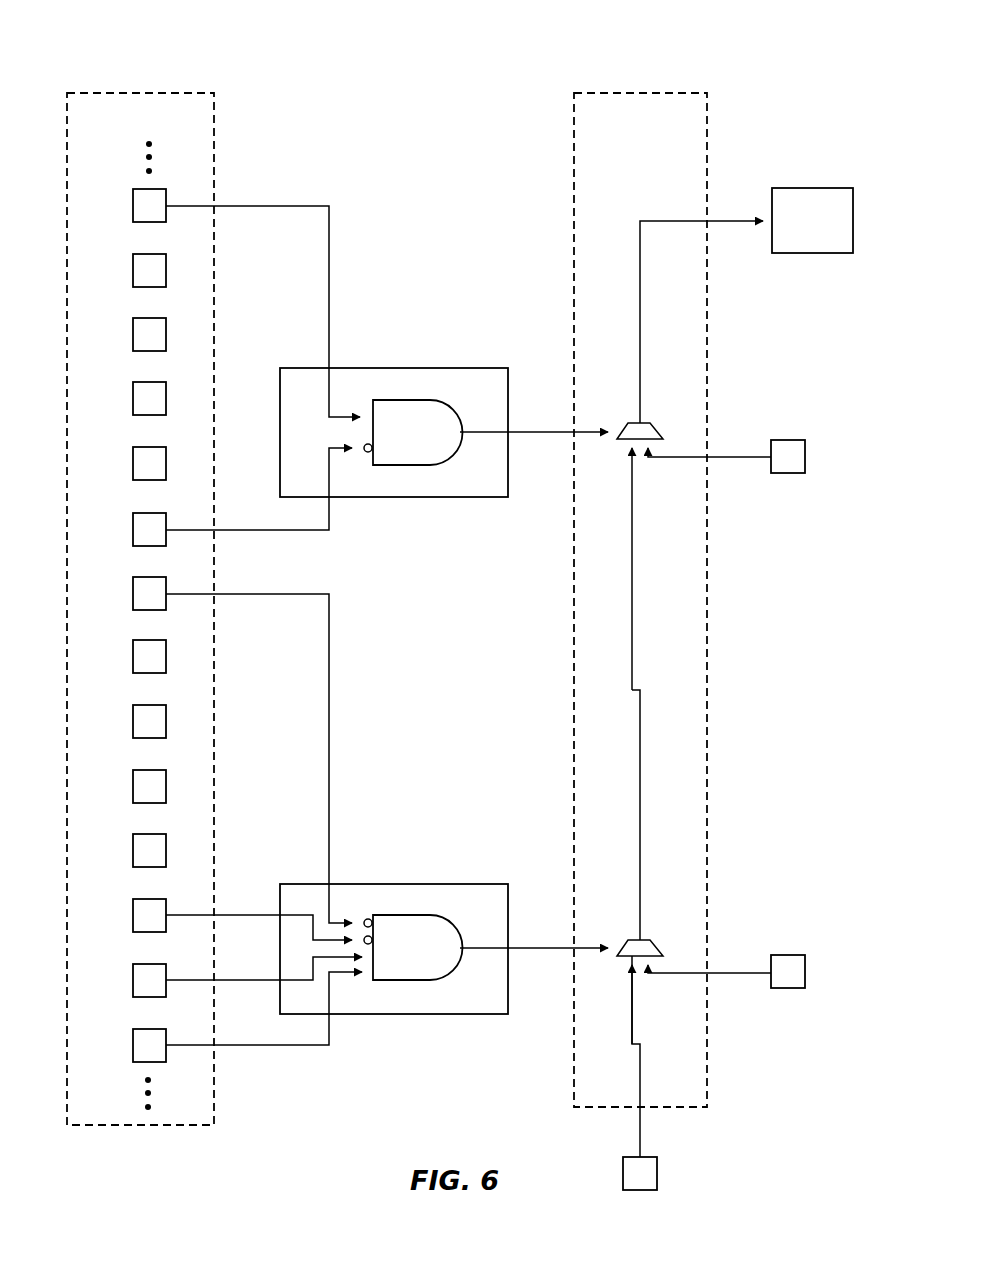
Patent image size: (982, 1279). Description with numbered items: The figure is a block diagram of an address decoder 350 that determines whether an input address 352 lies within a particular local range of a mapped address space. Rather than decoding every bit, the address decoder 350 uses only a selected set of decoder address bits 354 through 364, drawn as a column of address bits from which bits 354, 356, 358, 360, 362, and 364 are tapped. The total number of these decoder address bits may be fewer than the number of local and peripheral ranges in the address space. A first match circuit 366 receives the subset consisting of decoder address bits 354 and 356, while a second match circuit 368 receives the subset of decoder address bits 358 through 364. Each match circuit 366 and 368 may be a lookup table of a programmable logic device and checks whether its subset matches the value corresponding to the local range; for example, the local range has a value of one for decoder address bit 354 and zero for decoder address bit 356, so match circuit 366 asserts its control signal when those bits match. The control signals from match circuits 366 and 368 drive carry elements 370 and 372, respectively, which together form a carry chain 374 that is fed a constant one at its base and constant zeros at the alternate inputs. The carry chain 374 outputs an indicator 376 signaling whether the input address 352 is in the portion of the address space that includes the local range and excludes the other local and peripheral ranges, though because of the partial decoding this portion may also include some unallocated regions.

The address decoder 350 is at (381, 46).
The input address 352 is at (98, 93).
The decoder address bit 354 is at (133, 213).
The decoder address bit 356 is at (133, 538).
The decoder address bit 358 is at (133, 602).
The decoder address bit 360 is at (133, 924).
The decoder address bit 362 is at (133, 989).
The decoder address bit 364 is at (133, 1054).
The match circuit 366 is at (408, 368).
The match circuit 368 is at (408, 884).
The carry element 370 is at (656, 424).
The carry element 372 is at (656, 941).
The carry chain 374 is at (603, 92).
The indicator 376 is at (826, 188).